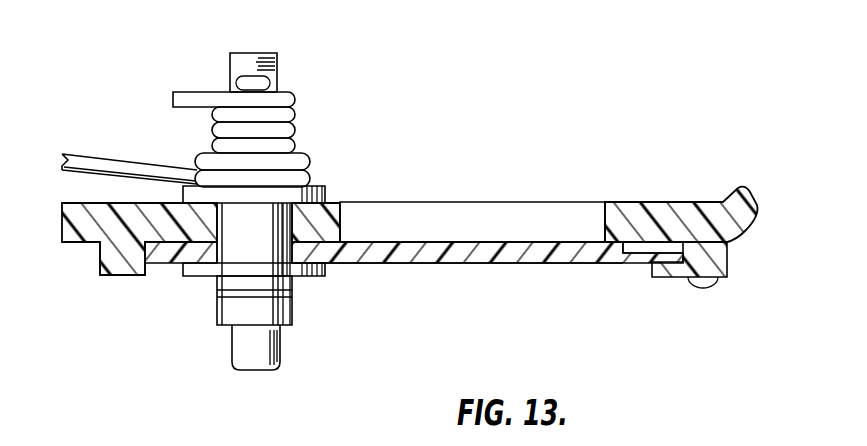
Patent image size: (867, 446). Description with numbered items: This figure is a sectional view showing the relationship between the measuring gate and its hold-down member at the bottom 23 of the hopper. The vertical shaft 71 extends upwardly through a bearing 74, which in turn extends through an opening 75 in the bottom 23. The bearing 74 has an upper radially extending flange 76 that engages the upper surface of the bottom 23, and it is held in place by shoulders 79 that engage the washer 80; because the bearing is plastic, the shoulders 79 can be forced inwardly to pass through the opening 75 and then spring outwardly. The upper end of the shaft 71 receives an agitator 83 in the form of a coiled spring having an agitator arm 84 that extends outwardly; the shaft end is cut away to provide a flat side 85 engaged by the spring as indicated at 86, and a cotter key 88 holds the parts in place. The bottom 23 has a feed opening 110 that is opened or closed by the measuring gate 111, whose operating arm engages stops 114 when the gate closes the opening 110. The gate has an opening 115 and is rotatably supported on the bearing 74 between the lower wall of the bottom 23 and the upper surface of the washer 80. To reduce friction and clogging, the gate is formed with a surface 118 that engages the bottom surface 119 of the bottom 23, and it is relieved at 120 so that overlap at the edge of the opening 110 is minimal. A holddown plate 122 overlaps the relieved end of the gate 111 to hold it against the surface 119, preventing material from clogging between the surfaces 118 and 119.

The bottom 23 is at (80, 207).
The vertical shaft 71 is at (277, 53).
The bearing 74 is at (233, 240).
The opening 75 is at (216, 218).
The upper radially extending flange 76 is at (313, 187).
The shoulders 79 is at (237, 278).
The washer 80 is at (320, 278).
The agitator 83 is at (300, 125).
The agitator arm 84 is at (85, 163).
The flat side 85 is at (247, 65).
The spring engagement 86 is at (265, 100).
The cotter key 88 is at (238, 82).
The feed opening 110 is at (497, 215).
The measuring gate 111 is at (538, 253).
The stops 114 is at (112, 258).
The opening 115 is at (293, 300).
The surface 118 is at (383, 243).
The bottom surface 119 is at (425, 250).
The relieved portion 120 is at (628, 246).
The holddown plate 122 is at (727, 264).